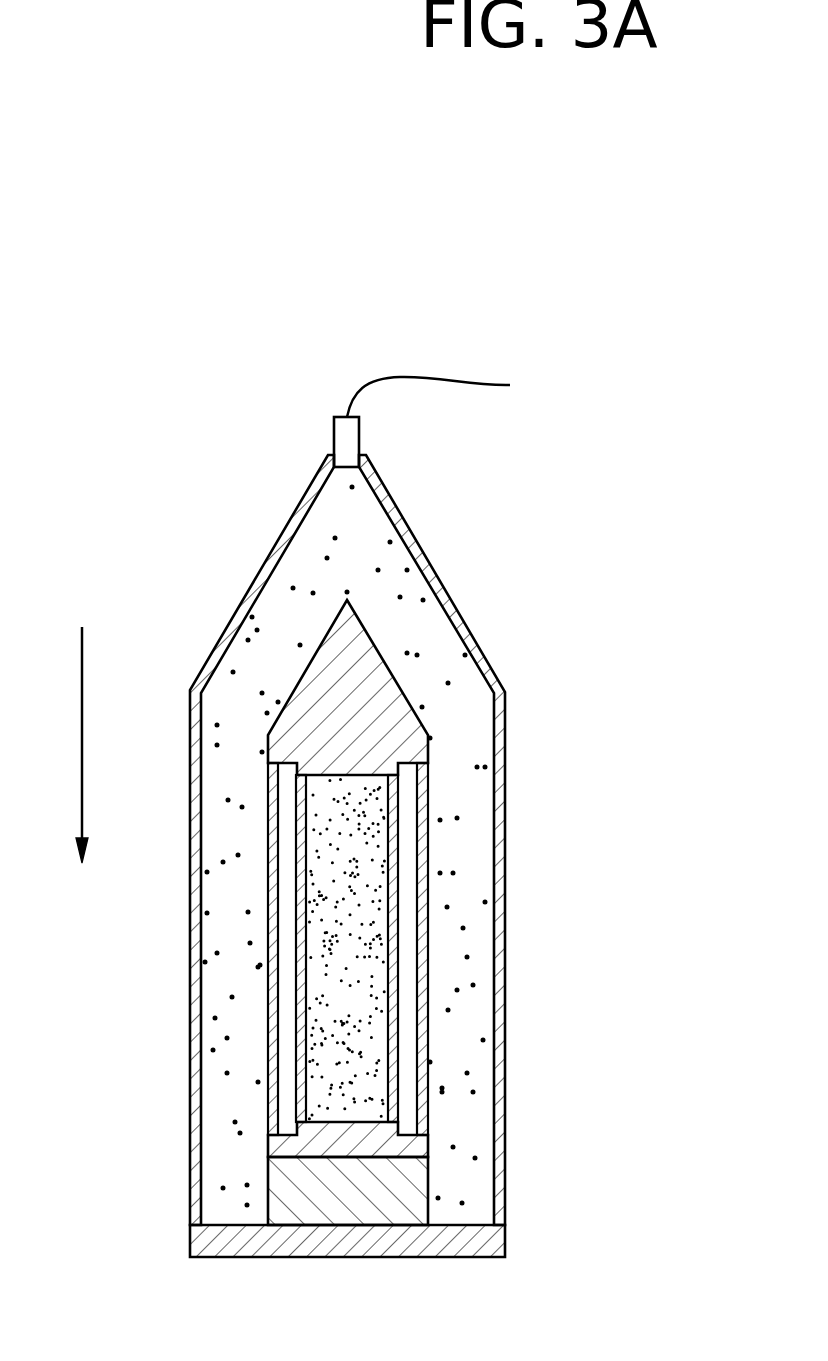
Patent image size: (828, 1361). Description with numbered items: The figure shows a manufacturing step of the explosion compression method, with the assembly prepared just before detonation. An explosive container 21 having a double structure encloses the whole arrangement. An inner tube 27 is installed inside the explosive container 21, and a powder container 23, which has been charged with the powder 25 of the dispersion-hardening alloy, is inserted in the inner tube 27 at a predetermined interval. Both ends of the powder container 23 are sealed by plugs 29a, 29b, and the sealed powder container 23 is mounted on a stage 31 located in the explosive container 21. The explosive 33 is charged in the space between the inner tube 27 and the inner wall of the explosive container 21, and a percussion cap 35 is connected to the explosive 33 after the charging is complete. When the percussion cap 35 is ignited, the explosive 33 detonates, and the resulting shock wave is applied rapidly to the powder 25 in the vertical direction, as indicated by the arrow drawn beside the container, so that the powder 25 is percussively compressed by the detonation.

The explosive container 21 is at (433, 578).
The percussion cap 35 is at (347, 438).
The explosive 33 is at (432, 646).
The plug 29a is at (377, 723).
The inner tube 27 is at (427, 888).
The powder container 23 is at (392, 968).
The powder 25 is at (367, 1032).
The plug 29b is at (393, 1147).
The stage 31 is at (393, 1187).